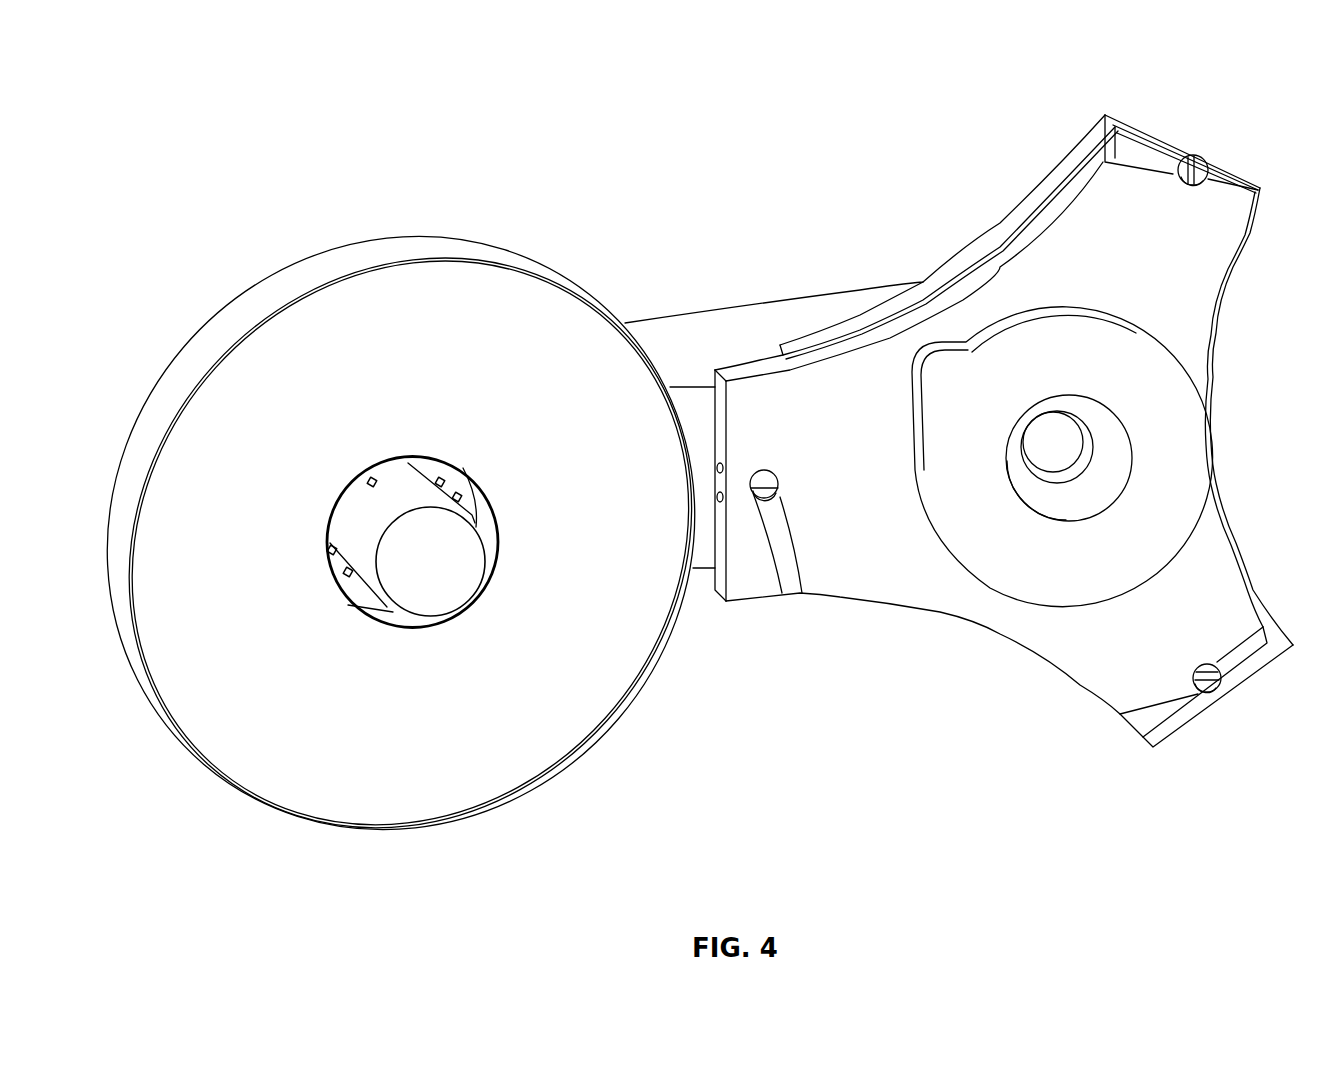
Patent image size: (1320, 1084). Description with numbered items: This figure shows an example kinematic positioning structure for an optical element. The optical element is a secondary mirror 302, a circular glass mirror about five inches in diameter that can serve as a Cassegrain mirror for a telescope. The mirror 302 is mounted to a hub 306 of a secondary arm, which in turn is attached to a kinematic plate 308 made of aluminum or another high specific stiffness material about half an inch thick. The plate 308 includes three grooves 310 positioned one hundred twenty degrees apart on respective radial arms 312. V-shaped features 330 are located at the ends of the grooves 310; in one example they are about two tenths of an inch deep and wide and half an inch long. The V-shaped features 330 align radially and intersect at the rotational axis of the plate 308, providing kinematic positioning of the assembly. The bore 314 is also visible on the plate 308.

The secondary mirror 302 is at (350, 832).
The hub 306 is at (420, 623).
The kinematic plate 308 is at (942, 625).
The grooves 310 is at (1150, 143).
The radial arms 312 is at (1190, 283).
The bore 314 is at (1050, 427).
The V-shaped features 330 is at (1207, 158).